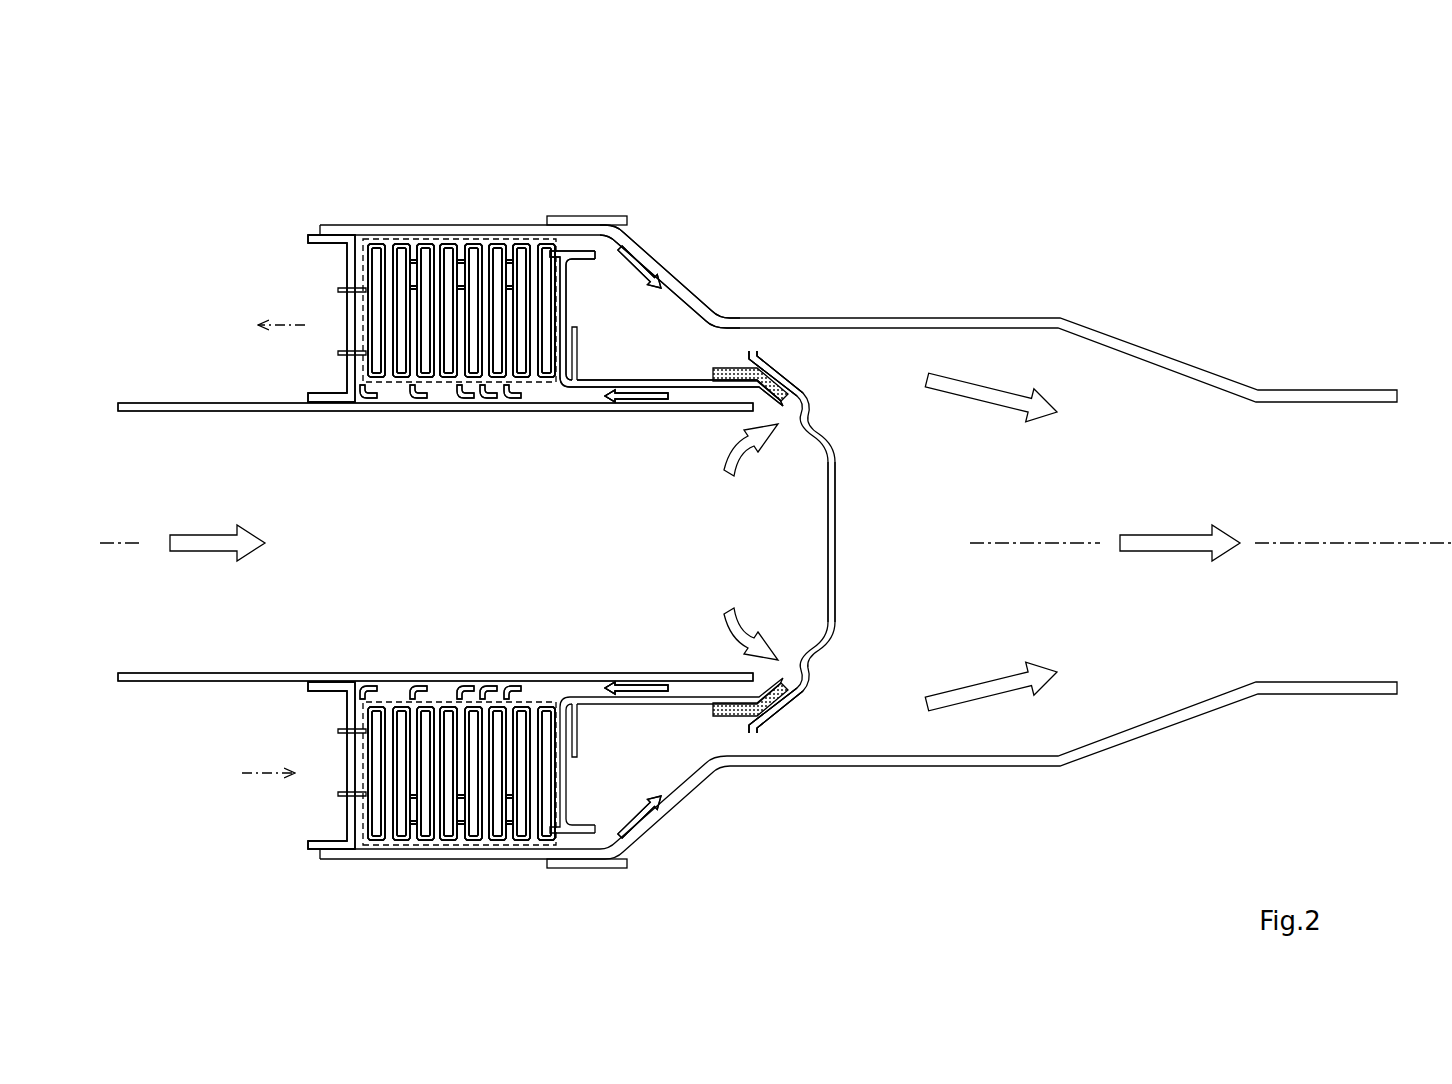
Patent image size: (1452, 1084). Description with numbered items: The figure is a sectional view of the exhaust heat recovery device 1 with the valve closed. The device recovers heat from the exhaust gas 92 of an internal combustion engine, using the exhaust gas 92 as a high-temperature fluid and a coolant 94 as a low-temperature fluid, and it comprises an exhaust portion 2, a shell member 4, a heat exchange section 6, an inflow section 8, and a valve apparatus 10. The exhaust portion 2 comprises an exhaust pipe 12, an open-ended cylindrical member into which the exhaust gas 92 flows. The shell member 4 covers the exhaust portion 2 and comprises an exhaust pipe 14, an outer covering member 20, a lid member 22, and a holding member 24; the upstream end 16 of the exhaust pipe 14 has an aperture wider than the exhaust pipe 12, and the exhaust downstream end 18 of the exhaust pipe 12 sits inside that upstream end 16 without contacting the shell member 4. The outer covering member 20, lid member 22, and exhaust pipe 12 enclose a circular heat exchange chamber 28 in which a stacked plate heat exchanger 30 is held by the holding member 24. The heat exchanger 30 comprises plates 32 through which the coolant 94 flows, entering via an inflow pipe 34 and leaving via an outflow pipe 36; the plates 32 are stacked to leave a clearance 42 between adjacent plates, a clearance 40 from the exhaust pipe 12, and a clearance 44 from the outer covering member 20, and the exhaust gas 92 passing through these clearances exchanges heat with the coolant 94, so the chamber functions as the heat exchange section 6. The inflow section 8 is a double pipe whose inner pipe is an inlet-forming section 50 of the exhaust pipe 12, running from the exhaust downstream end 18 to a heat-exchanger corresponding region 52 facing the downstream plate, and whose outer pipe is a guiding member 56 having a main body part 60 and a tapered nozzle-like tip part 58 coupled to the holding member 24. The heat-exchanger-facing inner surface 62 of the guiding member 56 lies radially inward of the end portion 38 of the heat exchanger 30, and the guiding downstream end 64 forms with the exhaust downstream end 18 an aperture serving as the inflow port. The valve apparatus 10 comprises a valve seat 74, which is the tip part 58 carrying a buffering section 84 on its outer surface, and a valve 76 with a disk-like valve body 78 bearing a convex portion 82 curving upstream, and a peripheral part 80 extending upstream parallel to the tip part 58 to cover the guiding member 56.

The exhaust heat recovery device 1 is at (730, 166).
The exhaust portion 2 is at (190, 703).
The shell member 4 is at (487, 215).
The heat exchange section 6 is at (400, 396).
The inflow section 8 is at (647, 664).
The valve apparatus 10 is at (857, 515).
The exhaust pipe 12 is at (160, 402).
The exhaust pipe 14 is at (1017, 318).
The upstream end 16 is at (576, 212).
The exhaust downstream end 18 is at (752, 418).
The outer covering member 20 is at (362, 227).
The lid member 22 is at (330, 243).
The holding member 24 is at (562, 285).
The heat exchange chamber 28 is at (345, 380).
The heat exchanger 30 is at (522, 235).
The plates 32 is at (415, 245).
The inflow pipe 34 is at (345, 755).
The outflow pipe 36 is at (345, 330).
The end portion 38 is at (540, 392).
The clearance 40 is at (475, 405).
The clearance 42 is at (432, 352).
The clearance 44 is at (460, 236).
The inlet-forming section 50 is at (688, 672).
The heat-exchanger corresponding region 52 is at (538, 420).
The guiding member 56 is at (650, 372).
The tip part 58 is at (758, 380).
The main body part 60 is at (605, 378).
The heat-exchanger-facing inner surface 62 is at (578, 395).
The guiding downstream end 64 is at (785, 422).
The valve seat 74 is at (776, 537).
The valve 76 is at (833, 448).
The valve body 78 is at (840, 553).
The peripheral part 80 is at (789, 380).
The convex portion 82 is at (820, 414).
The buffering section 84 is at (720, 370).
The exhaust gas 92 is at (705, 542).
The coolant 94 is at (269, 529).